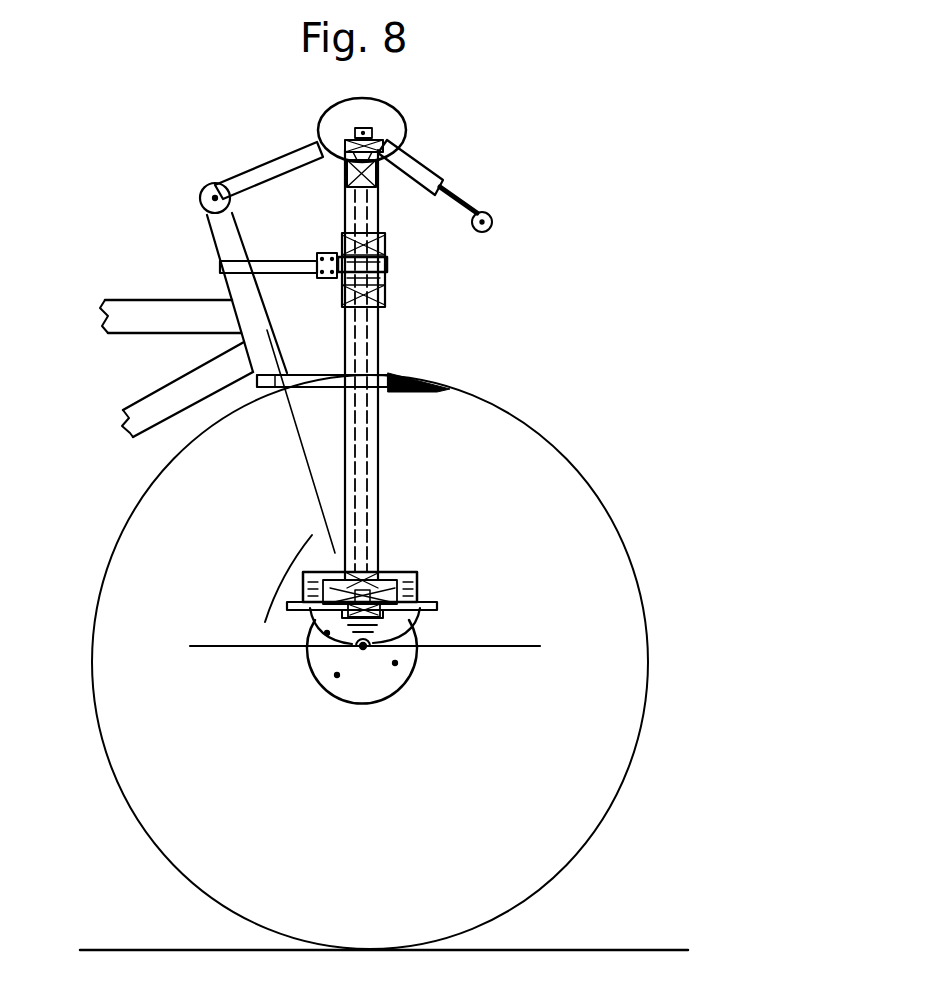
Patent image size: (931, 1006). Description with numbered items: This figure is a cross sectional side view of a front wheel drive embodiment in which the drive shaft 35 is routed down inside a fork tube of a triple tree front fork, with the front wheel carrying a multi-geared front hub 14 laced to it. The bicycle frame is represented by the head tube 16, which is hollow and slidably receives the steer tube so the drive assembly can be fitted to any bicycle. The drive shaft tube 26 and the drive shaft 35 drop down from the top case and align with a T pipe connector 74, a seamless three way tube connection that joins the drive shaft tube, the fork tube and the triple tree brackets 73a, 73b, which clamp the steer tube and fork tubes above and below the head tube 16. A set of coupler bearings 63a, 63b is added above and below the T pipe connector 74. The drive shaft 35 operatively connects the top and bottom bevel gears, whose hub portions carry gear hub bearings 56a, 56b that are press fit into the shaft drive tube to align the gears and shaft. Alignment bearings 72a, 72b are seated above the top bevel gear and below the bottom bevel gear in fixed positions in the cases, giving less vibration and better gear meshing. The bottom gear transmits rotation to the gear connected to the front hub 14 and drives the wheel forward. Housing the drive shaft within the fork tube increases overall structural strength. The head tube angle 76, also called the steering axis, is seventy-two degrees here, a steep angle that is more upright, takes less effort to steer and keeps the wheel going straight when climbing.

The multi-geared front hub 14 is at (397, 710).
The head tube 16 is at (247, 322).
The drive shaft tube 26 is at (378, 432).
The drive shaft 35 is at (365, 362).
The gear hub bearing 56a is at (345, 165).
The gear hub bearing 56b is at (378, 560).
The coupler bearing 63a is at (392, 225).
The coupler bearing 63b is at (408, 267).
The alignment bearing 72a is at (387, 145).
The alignment bearing 72b is at (378, 612).
The triple tree bracket 73a is at (218, 267).
The triple tree bracket 73b is at (450, 389).
The T pipe connector 74 is at (343, 287).
The head tube angle 76 is at (283, 568).